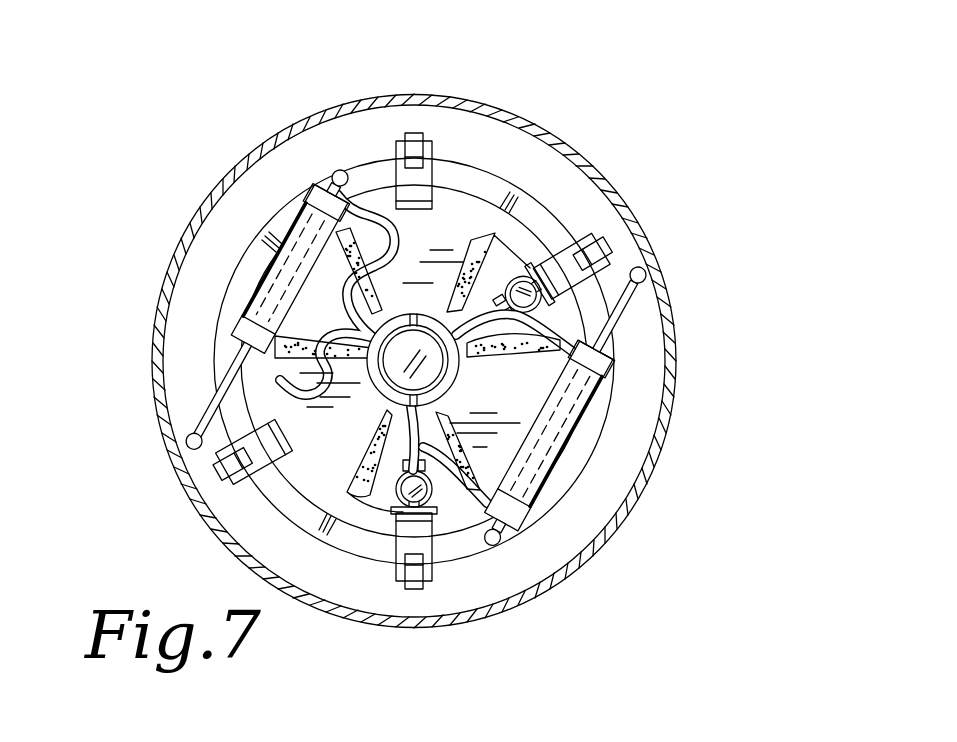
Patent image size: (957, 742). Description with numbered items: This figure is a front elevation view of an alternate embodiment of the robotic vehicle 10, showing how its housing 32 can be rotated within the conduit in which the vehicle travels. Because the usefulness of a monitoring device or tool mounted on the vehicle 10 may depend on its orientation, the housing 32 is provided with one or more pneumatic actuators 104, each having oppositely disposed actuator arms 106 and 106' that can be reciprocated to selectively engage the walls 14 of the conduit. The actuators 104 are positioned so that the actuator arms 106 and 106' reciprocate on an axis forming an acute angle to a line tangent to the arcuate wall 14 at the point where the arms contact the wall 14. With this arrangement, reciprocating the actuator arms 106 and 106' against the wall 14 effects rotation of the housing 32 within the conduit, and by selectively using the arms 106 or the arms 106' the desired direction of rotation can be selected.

The robotic vehicle 10 is at (360, 160).
The wall of the conduit 14 is at (594, 172).
The housing 32 is at (460, 220).
The pneumatic actuator 104 is at (273, 272).
The actuator arm 106 is at (414, 355).
The actuator arm 106' is at (385, 366).